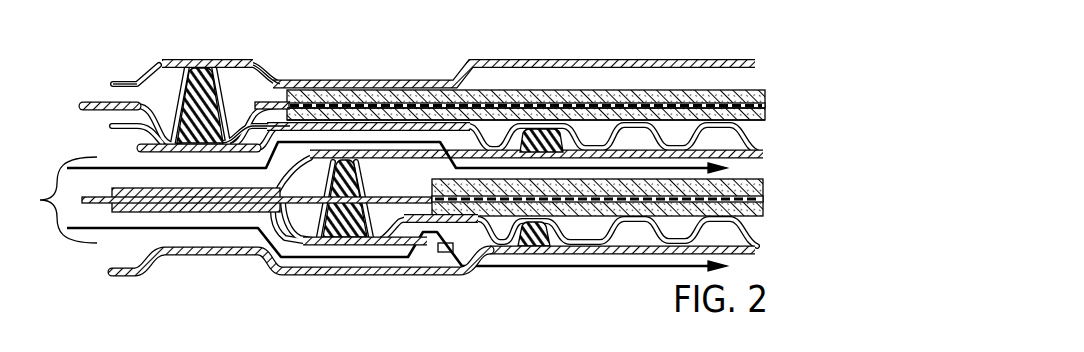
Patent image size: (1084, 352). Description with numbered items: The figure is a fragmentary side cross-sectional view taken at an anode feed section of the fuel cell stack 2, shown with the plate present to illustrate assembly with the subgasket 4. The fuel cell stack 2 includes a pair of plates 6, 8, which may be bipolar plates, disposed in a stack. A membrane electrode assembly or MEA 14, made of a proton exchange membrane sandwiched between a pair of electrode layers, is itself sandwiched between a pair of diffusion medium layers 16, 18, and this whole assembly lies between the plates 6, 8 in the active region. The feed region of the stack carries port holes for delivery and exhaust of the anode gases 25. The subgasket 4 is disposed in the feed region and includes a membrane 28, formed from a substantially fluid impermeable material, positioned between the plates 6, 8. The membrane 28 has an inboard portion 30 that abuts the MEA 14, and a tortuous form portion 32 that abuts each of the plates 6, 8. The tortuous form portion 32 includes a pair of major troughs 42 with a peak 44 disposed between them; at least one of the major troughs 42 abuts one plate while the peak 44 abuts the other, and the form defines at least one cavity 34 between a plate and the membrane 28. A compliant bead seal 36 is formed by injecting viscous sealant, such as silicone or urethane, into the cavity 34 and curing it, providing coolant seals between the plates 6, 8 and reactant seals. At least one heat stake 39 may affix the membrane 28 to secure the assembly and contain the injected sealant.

The fuel cell stack 2 is at (618, 42).
The subgasket 4 is at (83, 103).
The membrane 28 is at (434, 154).
The major troughs 42 is at (156, 112).
The compliant bead seal 36 is at (182, 140).
The peak 44 is at (191, 58).
The cavity 34 is at (205, 68).
The tortuous form portion 32 is at (226, 97).
The inboard portion 30 is at (418, 95).
The plate 6 is at (757, 58).
The diffusion medium layer 16 is at (760, 91).
The membrane electrode assembly 14 is at (766, 105).
The diffusion medium layer 18 is at (762, 116).
The plate 8 is at (762, 154).
The anode gases 25 is at (42, 200).
The heat stake 39 is at (167, 143).